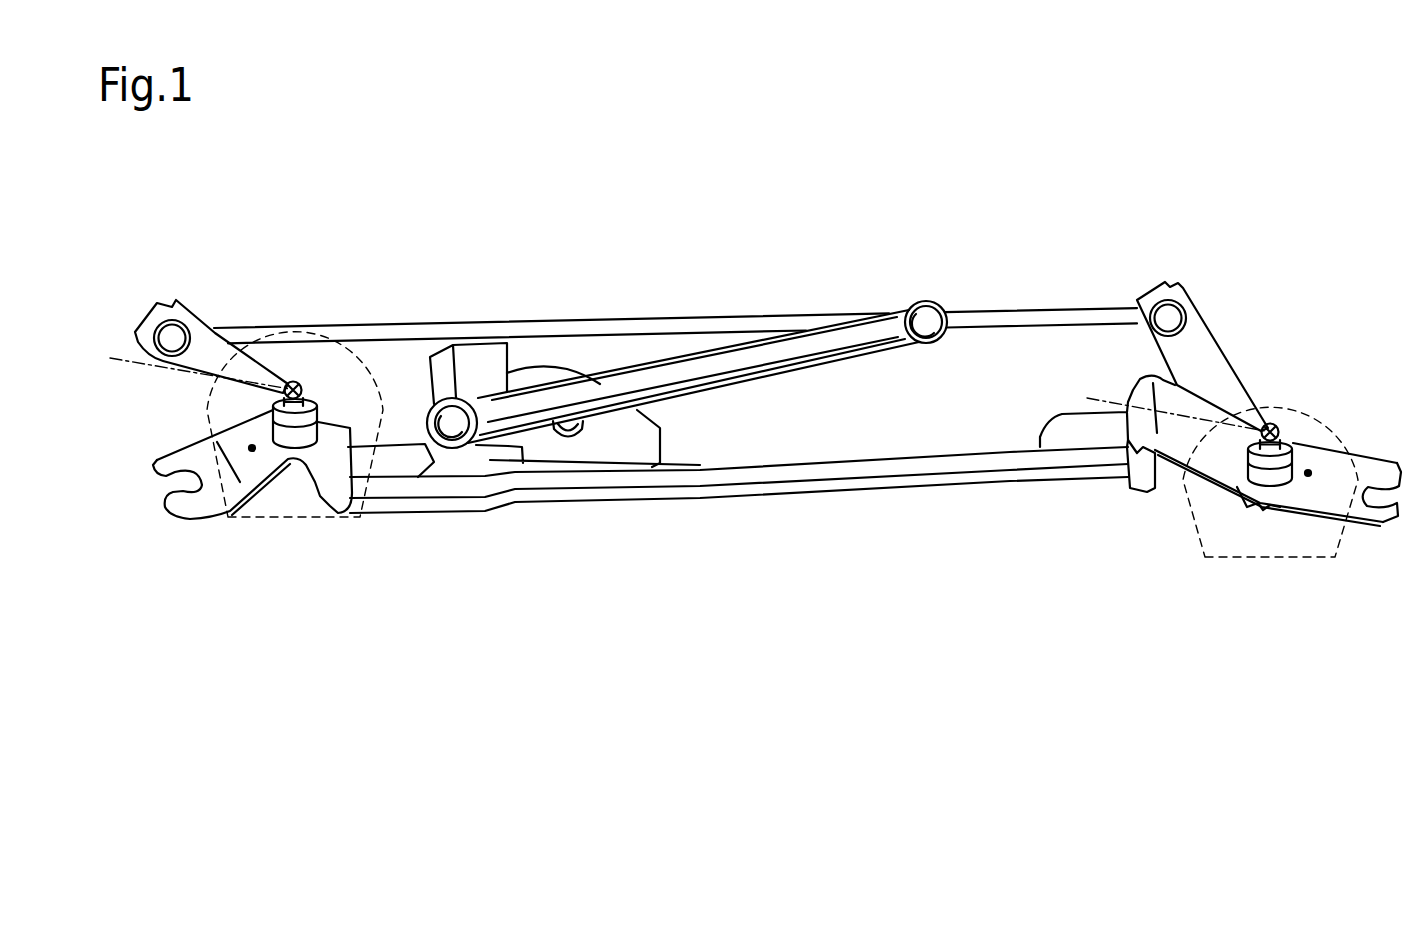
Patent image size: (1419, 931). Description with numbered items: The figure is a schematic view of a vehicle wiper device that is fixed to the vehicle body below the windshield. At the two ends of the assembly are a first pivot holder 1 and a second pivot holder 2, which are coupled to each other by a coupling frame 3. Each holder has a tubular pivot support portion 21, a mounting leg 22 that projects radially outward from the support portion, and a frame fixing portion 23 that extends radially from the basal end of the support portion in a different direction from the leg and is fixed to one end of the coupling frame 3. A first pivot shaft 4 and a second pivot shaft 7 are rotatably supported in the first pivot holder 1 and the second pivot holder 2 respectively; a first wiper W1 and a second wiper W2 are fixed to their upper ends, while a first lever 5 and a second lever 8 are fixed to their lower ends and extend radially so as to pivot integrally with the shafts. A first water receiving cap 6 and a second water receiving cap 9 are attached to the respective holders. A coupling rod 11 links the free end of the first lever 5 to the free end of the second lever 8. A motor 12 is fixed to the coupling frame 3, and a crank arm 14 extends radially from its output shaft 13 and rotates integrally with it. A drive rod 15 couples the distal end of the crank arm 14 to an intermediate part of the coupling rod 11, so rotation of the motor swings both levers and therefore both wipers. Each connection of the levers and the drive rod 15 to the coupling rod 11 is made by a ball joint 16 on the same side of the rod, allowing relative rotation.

The first pivot holder 1 is at (313, 453).
The second pivot holder 2 is at (1290, 490).
The coupling frame 3 is at (865, 471).
The first pivot shaft 4 is at (300, 387).
The first lever 5 is at (217, 347).
The first water receiving cap 6 is at (250, 517).
The second pivot shaft 7 is at (1280, 418).
The second lever 8 is at (1203, 338).
The second water receiving cap 9 is at (1248, 557).
The coupling rod 11 is at (617, 325).
The motor 12 is at (397, 355).
The output shaft 13 is at (579, 447).
The crank arm 14 is at (508, 447).
The drive rod 15 is at (733, 360).
The ball joint 16 is at (180, 332).
The pivot support portion 21 is at (313, 428).
The mounting leg 22 is at (180, 505).
The frame fixing portion 23 is at (407, 460).
The first wiper W1 is at (127, 360).
The second wiper W2 is at (1108, 403).